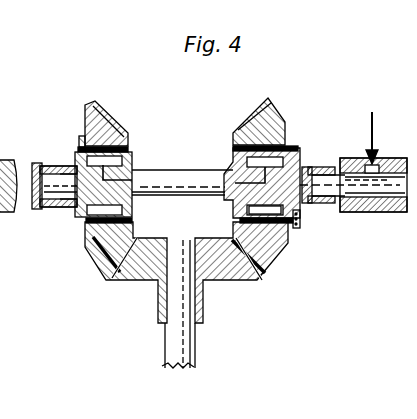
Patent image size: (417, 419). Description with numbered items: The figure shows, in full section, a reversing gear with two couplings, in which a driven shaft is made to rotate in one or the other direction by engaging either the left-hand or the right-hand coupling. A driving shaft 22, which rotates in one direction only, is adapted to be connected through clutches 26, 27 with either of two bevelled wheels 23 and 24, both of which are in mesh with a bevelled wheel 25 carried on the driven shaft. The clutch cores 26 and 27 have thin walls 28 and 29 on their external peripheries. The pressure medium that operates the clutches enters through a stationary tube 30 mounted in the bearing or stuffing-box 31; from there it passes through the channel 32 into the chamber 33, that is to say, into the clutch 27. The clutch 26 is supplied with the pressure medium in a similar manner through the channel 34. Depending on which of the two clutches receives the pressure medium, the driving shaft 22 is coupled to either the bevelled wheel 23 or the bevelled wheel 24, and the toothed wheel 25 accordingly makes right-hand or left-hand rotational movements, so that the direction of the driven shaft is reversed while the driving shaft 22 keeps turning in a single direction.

The driving shaft 22 is at (182, 196).
The bevelled wheel 23 is at (114, 121).
The bevelled wheel 24 is at (250, 128).
The bevelled wheel 25 is at (133, 278).
The clutch 26 is at (129, 170).
The clutch 27 is at (228, 176).
The thin wall 28 is at (79, 146).
The thin wall 29 is at (285, 144).
The stationary tube 30 is at (374, 117).
The bearing or stuffing-box 31 is at (374, 212).
The channel 32 is at (299, 208).
The chamber 33 is at (255, 210).
The channel 34 is at (41, 205).